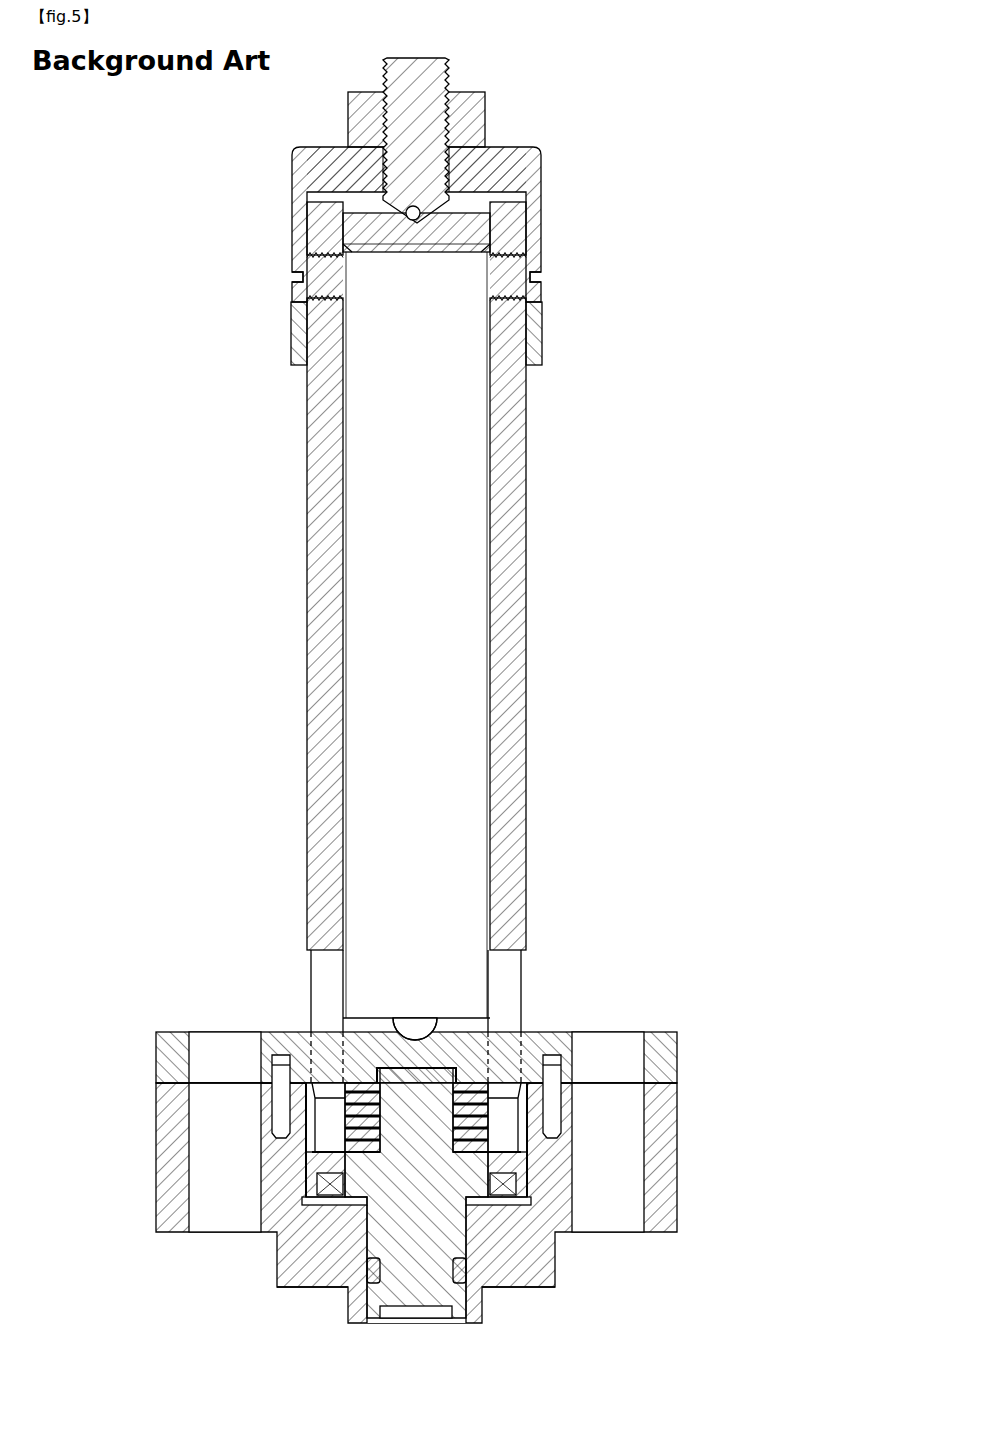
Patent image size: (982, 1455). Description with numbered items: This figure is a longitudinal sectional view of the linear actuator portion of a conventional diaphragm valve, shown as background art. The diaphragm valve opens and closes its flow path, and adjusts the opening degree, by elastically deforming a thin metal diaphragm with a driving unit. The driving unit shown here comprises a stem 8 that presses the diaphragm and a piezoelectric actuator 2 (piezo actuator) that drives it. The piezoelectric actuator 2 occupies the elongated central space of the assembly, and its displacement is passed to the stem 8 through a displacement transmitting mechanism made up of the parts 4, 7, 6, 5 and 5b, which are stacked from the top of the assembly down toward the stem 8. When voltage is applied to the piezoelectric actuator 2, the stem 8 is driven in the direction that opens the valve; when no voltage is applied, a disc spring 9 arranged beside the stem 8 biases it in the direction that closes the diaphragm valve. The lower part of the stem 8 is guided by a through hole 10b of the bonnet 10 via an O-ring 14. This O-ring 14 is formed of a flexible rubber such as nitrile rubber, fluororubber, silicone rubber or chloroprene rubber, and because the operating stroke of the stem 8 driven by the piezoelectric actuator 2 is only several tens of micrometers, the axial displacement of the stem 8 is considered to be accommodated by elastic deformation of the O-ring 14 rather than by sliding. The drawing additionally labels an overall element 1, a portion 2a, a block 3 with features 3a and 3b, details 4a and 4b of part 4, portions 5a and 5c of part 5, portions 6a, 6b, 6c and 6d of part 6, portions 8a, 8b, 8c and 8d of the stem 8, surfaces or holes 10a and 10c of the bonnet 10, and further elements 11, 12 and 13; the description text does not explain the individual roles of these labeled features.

The pressure sensor assembly 1 is at (597, 162).
The piezoelectric actuator 2 is at (420, 600).
The protrusion 2a is at (415, 1025).
The base block 3 is at (445, 1027).
The recess 3a is at (440, 1042).
The through hole 3b is at (222, 1056).
The displacement transmitting mechanism component 4 is at (373, 227).
The recess 4a is at (420, 222).
The chamfered portion 4b is at (350, 257).
The displacement transmitting mechanism component 5 is at (308, 660).
The lower portion of cylinder 5a is at (327, 972).
The displacement transmitting mechanism component 5b is at (338, 1195).
The groove 5c is at (318, 290).
The displacement transmitting mechanism component 6 is at (292, 162).
The top wall of cap 6a is at (470, 165).
The lower sleeve of cap 6b is at (297, 328).
The threaded hole 6c is at (397, 145).
The threaded portion 6d is at (302, 255).
The displacement transmitting mechanism component 7 is at (410, 84).
The stem 8 is at (420, 1175).
The upper end of valve body 8a is at (417, 1133).
The flange of valve body 8b is at (323, 1160).
The seal 8c is at (327, 1182).
The lower end of valve body 8d is at (455, 1318).
The disc spring 9 is at (470, 1105).
The bonnet 10 is at (420, 1230).
The bottom surface 10a is at (283, 1290).
The through hole 10b is at (378, 1250).
The through hole 10c is at (215, 1122).
The pin 11 is at (283, 1075).
The ring 12 is at (315, 268).
The nut 13 is at (475, 108).
The O-ring 14 is at (460, 1272).